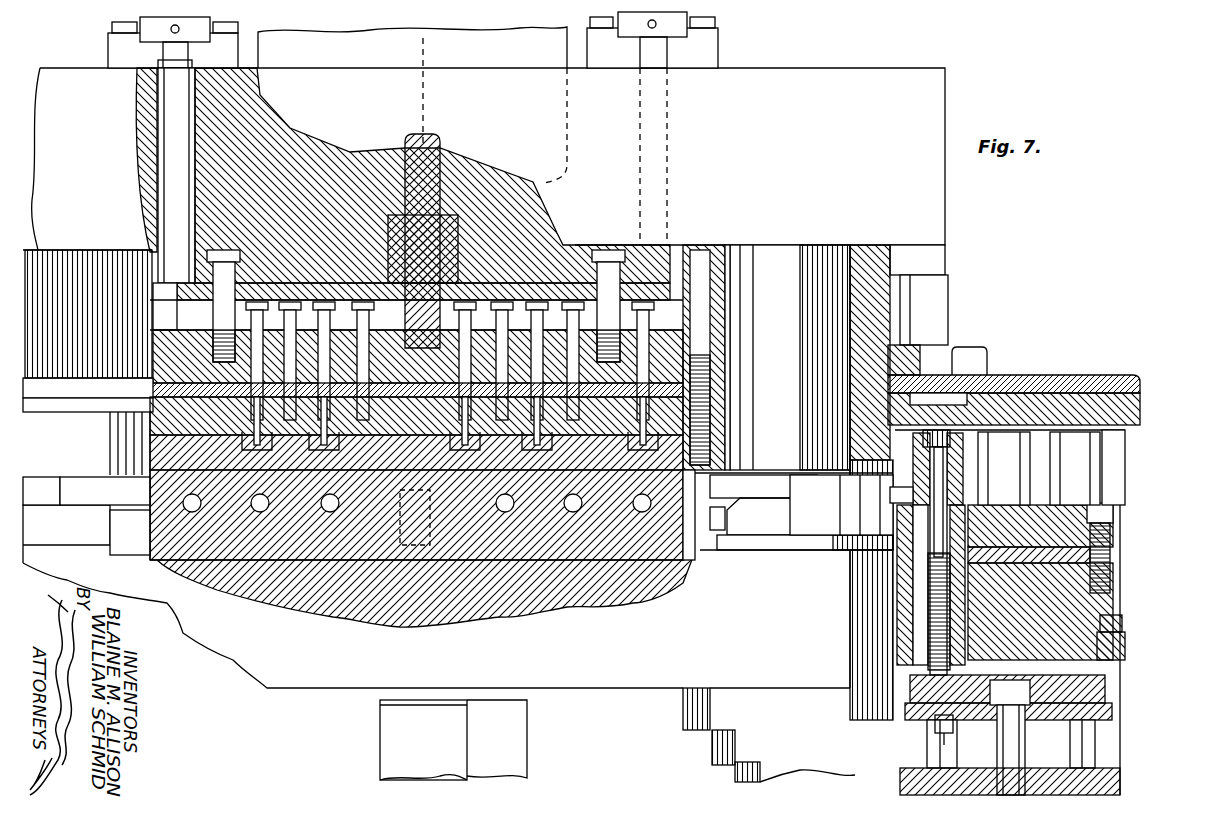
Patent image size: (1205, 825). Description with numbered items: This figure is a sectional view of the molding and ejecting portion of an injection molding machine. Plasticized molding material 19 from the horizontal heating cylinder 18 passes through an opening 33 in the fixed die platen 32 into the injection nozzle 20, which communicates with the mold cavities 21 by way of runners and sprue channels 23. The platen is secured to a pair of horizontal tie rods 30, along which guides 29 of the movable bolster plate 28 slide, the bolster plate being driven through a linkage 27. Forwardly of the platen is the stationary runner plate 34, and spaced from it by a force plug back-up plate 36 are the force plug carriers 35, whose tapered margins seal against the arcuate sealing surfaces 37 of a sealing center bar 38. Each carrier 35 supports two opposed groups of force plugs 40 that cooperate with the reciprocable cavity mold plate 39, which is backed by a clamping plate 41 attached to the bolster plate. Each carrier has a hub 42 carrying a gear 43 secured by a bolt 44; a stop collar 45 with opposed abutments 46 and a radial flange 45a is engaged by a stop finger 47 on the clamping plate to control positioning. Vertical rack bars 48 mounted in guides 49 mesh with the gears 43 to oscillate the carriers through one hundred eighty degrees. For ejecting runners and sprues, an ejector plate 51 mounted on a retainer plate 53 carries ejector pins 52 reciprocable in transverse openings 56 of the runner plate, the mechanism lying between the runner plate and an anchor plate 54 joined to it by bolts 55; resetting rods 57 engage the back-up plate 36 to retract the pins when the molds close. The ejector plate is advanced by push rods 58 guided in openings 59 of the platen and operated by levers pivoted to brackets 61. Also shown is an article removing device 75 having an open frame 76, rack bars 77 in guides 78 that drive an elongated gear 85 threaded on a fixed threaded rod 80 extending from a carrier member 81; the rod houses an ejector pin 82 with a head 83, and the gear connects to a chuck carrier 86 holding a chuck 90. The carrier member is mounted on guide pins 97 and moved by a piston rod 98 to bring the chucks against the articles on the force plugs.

The heating cylinder 18 is at (311, 48).
The plasticized molding material 19 is at (405, 133).
The injection nozzle 20 is at (442, 206).
The mold cavities 21 is at (262, 456).
The sprue channels 23 is at (706, 413).
The linkage 27 is at (455, 742).
The bolster plate 28 is at (618, 686).
The guides 29 is at (715, 748).
The tie rods 30 is at (790, 376).
The fixed die platen 32 is at (843, 101).
The opening 33 is at (424, 42).
The runner plate 34 is at (700, 346).
The force plug carrier 35 is at (160, 420).
The force plug back-up plate 36 is at (1120, 378).
The arcuate sealing surfaces 37 is at (362, 440).
The sealing center bar 38 is at (525, 428).
The cavity mold plate 39 is at (168, 461).
The force plugs 40 is at (250, 432).
The clamping plate 41 is at (668, 562).
The hub 42 is at (860, 248).
The gear 43 is at (125, 265).
The bolt 44 is at (728, 278).
The stop collar 45 is at (828, 522).
The radial flange 45a is at (728, 561).
The abutments 46 is at (798, 550).
The stop finger 47 is at (790, 497).
The rack bars 48 is at (925, 350).
The guides 49 is at (946, 281).
The ejector plate 51 is at (695, 250).
The ejector pins 52 is at (660, 323).
The retainer plate 53 is at (632, 255).
The anchor plate 54 is at (563, 248).
The bolts 55 is at (222, 322).
The transverse openings 56 is at (500, 332).
The plate resetting rods 57 is at (318, 323).
The push rods 58 is at (172, 176).
The openings 59 is at (140, 152).
The brackets 61 is at (122, 47).
The article removing device 75 is at (1131, 568).
The open frame 76 is at (1120, 778).
The rack bars 77 is at (1125, 652).
The guides 78 is at (1122, 630).
The threaded rod 80 is at (940, 630).
The carrier member 81 is at (1121, 699).
The ejector pin 82 is at (943, 500).
The head 83 is at (950, 730).
The elongated gear 85 is at (925, 610).
The chuck carrier 86 is at (913, 480).
The chuck 90 is at (1000, 470).
The guide pins 97 is at (1085, 745).
The piston rod 98 is at (1012, 752).